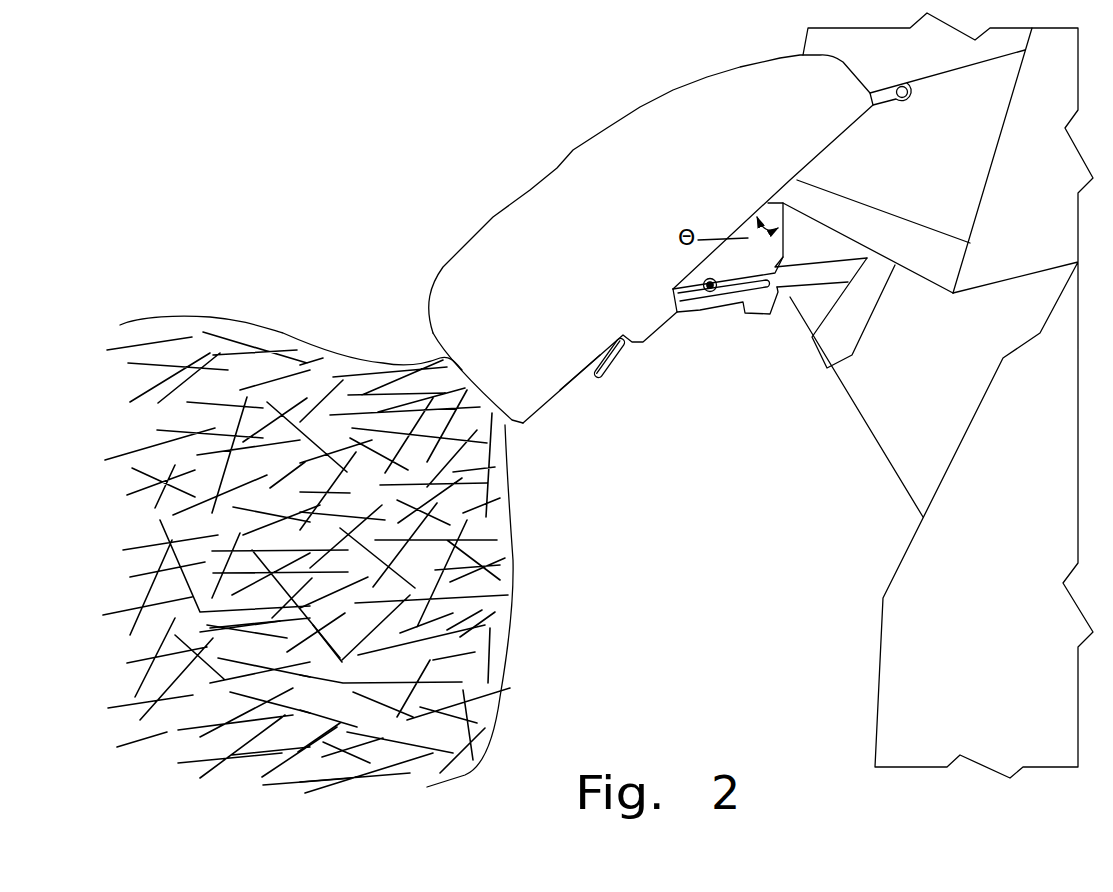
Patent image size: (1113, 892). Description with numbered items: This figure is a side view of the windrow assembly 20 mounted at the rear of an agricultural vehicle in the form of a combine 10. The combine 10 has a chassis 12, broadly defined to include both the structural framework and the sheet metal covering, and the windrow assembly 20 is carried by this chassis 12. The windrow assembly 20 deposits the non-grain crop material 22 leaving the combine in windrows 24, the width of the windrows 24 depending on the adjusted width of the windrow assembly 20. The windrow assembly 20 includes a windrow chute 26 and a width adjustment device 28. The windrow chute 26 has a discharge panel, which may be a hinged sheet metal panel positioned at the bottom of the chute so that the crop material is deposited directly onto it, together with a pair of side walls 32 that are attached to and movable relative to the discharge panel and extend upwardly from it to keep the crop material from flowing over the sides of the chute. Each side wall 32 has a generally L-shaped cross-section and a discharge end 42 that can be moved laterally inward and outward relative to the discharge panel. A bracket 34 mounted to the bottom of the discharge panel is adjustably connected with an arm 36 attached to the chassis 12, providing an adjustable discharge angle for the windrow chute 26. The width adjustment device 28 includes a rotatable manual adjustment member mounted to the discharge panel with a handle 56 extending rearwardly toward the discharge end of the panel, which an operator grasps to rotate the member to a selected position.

The combine 10 is at (900, 395).
The chassis 12 is at (913, 479).
The windrow assembly 20 is at (670, 276).
The non-grain crop material 22 is at (514, 562).
The windrows 24 is at (347, 510).
The windrow chute 26 is at (582, 388).
The width adjustment device 28 is at (784, 308).
The side walls 32 is at (510, 237).
The bracket 34 is at (728, 305).
The arm 36 is at (800, 280).
The discharge end 42 is at (505, 432).
The handle 56 is at (613, 370).